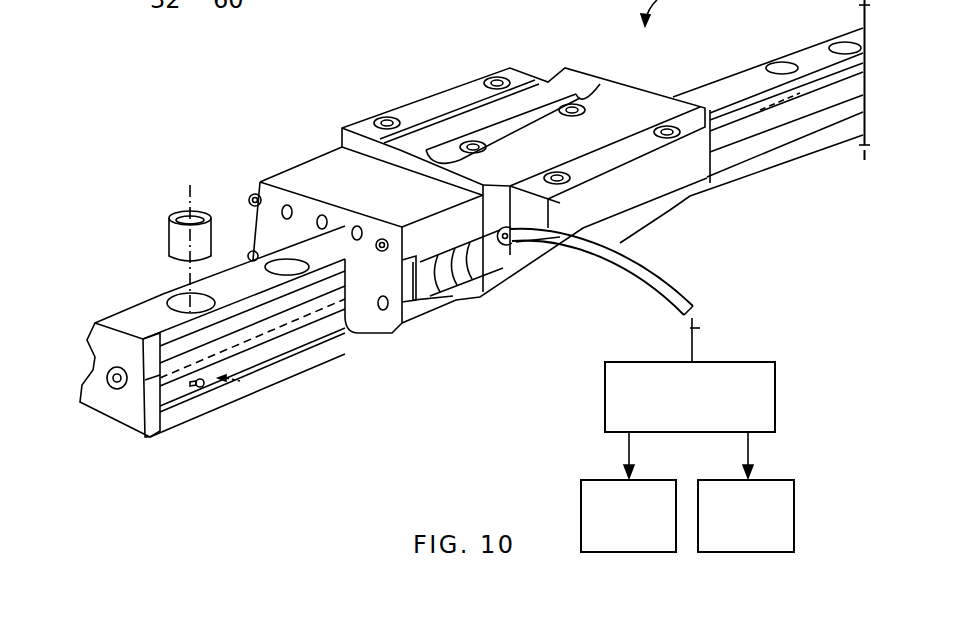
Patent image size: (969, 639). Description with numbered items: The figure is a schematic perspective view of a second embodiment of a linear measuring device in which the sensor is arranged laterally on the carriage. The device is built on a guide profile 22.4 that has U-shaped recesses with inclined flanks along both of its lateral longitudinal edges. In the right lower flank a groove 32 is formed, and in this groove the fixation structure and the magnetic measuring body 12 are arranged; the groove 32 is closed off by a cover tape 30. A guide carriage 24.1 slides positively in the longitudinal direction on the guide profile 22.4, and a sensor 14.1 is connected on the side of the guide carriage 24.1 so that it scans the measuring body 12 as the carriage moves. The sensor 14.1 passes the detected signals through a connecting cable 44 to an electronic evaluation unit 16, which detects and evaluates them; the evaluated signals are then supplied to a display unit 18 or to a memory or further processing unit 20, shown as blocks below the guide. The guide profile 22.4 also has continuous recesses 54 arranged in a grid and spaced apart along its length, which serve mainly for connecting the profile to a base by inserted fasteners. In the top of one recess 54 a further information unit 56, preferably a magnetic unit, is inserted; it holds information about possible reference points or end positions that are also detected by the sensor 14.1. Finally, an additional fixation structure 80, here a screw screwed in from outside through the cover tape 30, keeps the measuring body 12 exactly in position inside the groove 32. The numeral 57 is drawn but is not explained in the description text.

The measuring body 12 is at (240, 381).
The sensor 14.1 is at (305, 178).
The evaluation unit 16 is at (748, 362).
The display unit 18 is at (612, 553).
The memory or further processing unit 20 is at (730, 553).
The guide profile 22.4 is at (212, 413).
The guide carriage 24.1 is at (444, 106).
The cover tape 30 is at (299, 345).
The groove 32 is at (112, 415).
The connecting cable 44 is at (699, 329).
The recess 54 is at (275, 262).
The information unit 56 is at (165, 241).
The sensor 57 is at (347, 2).
The additional fixation structure 80 is at (148, 416).